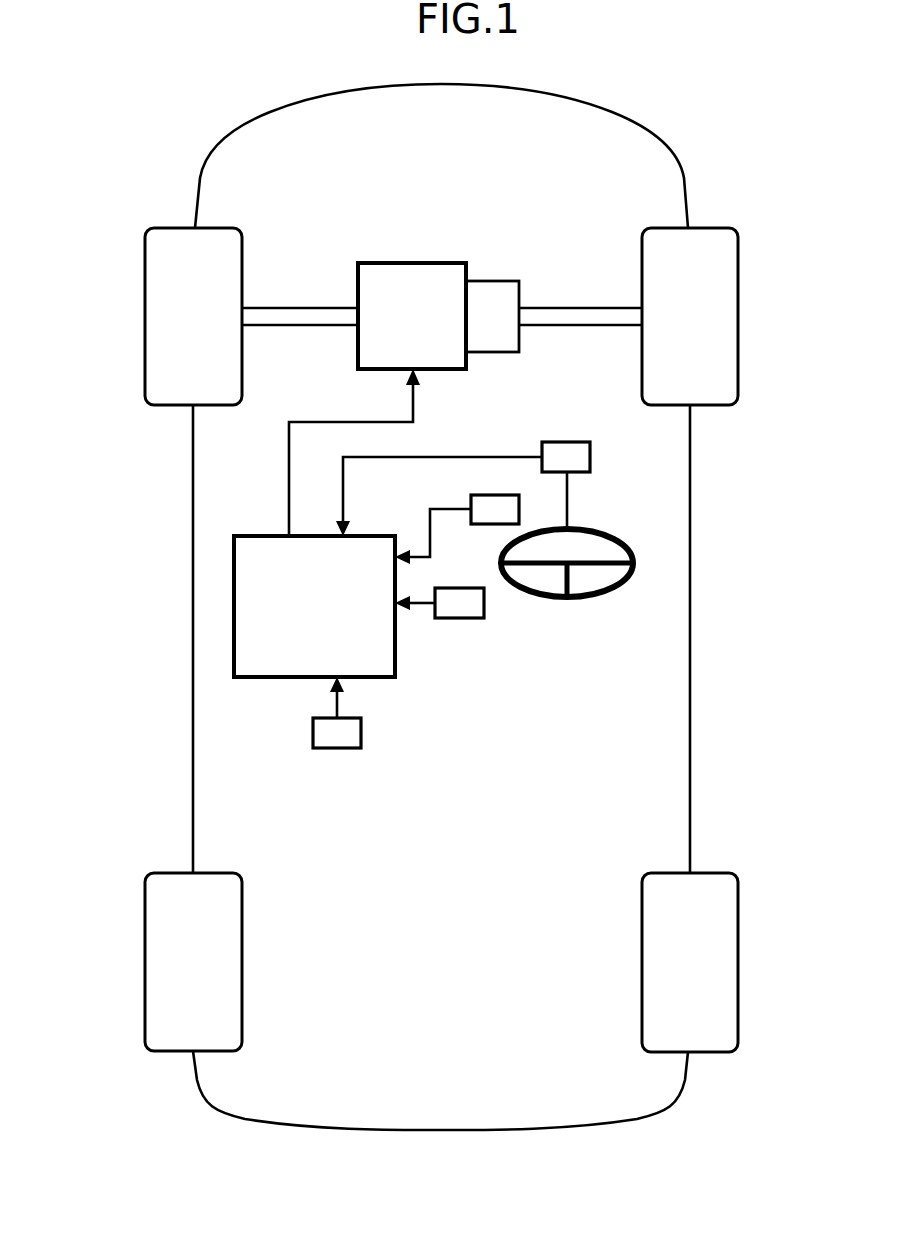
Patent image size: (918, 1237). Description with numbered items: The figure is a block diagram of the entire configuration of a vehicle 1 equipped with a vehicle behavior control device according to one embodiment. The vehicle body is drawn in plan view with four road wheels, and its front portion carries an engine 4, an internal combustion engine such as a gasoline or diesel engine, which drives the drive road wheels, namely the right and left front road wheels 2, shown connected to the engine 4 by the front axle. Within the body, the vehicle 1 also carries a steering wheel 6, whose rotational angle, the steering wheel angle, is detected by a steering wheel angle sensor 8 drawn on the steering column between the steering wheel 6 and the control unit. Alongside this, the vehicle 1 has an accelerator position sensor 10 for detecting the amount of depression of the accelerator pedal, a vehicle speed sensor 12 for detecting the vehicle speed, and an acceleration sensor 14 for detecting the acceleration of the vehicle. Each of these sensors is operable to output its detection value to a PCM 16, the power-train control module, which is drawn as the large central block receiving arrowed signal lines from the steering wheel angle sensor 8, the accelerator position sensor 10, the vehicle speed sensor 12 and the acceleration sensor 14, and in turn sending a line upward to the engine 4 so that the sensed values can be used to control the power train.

The vehicle 1 is at (692, 104).
The front road wheels 2 is at (145, 315).
The engine 4 is at (411, 262).
The steering wheel 6 is at (599, 531).
The steering wheel angle sensor 8 is at (590, 455).
The accelerator position sensor 10 is at (471, 494).
The vehicle speed sensor 12 is at (458, 619).
The acceleration sensor 14 is at (338, 749).
The PCM (Power-train Control Module) 16 is at (252, 536).